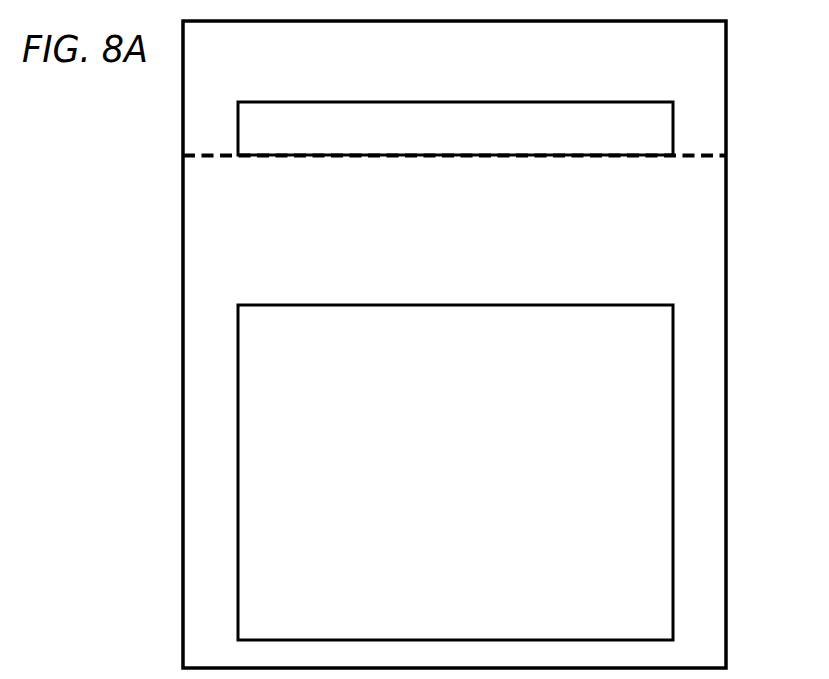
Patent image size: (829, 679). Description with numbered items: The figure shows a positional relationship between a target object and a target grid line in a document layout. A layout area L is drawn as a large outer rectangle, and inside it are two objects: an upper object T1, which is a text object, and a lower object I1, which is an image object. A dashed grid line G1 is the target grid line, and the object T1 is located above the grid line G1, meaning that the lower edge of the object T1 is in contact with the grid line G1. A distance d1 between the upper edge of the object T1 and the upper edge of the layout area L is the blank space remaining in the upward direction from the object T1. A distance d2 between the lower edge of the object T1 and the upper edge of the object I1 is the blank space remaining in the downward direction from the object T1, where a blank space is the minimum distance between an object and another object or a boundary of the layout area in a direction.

The layout area L is at (726, 390).
The object T1 is at (673, 126).
The grid line G1 is at (726, 156).
The object I1 is at (672, 493).
The distance d1 is at (564, 22).
The distance d2 is at (564, 158).